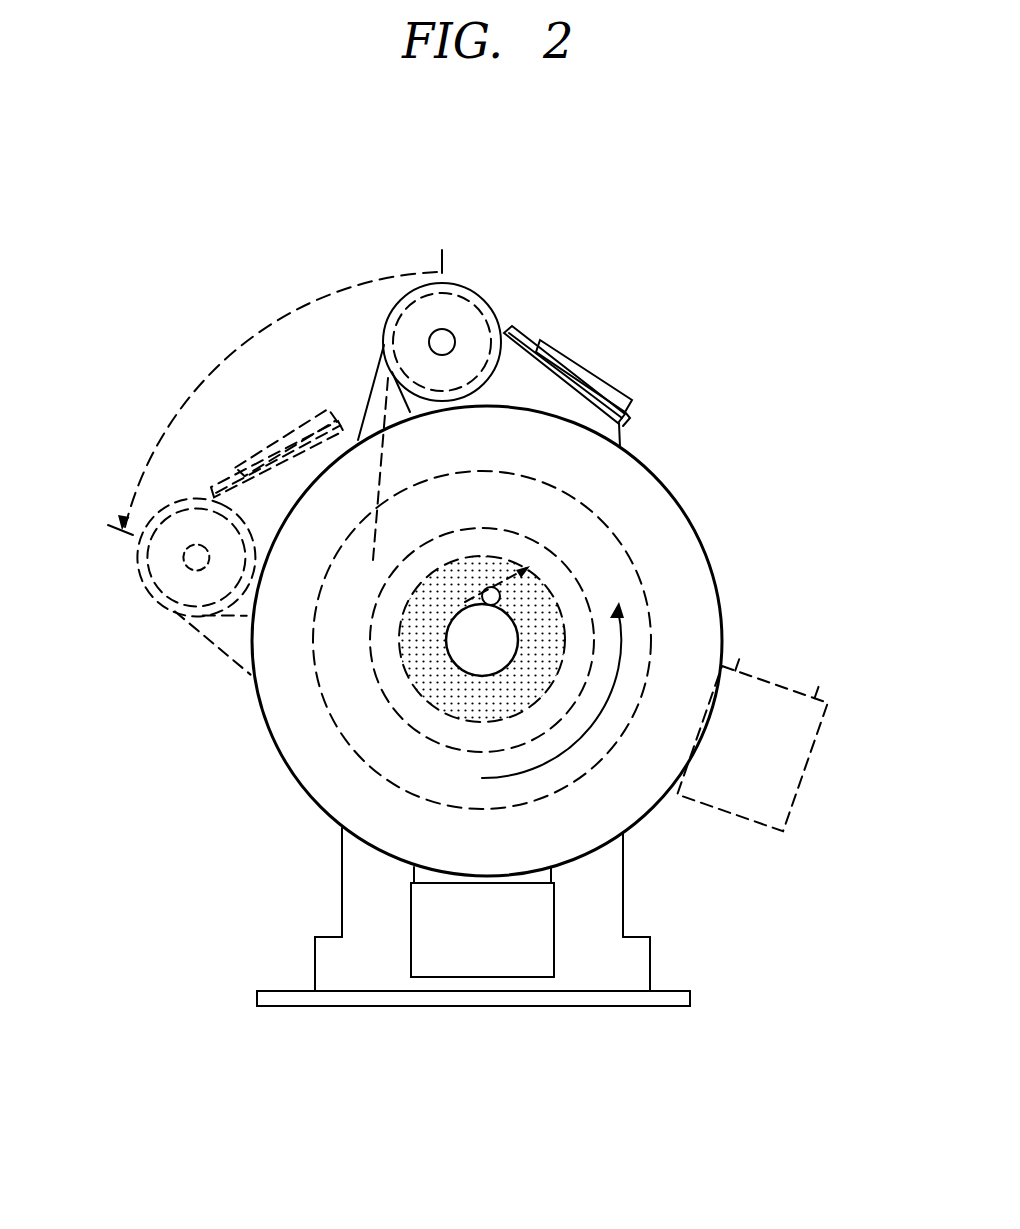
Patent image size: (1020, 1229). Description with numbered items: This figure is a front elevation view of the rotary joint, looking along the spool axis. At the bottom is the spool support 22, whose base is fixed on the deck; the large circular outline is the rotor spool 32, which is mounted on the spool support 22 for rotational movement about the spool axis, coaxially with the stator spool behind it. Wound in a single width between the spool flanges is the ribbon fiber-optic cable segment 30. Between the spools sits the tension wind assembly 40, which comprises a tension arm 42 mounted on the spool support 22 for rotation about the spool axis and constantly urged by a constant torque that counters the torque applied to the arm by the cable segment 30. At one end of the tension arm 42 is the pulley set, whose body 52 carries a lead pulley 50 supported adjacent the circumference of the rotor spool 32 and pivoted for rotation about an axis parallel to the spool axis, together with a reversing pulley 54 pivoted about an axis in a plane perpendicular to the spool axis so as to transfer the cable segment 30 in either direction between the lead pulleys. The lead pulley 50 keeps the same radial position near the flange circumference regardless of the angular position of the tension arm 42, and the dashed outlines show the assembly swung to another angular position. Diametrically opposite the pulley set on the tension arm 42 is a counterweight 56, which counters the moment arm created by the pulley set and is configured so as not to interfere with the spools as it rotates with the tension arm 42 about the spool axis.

The spool support 22 is at (613, 915).
The ribbon fiber-optic cable segment 30 is at (481, 397).
The rotor spool 32 is at (654, 462).
The tension wind assembly 40 is at (462, 278).
The tension arm 42 is at (389, 375).
The lead pulley 50 is at (471, 308).
The pulley set body 52 is at (627, 423).
The reversing pulley 54 is at (588, 371).
The counterweight 56 is at (437, 947).